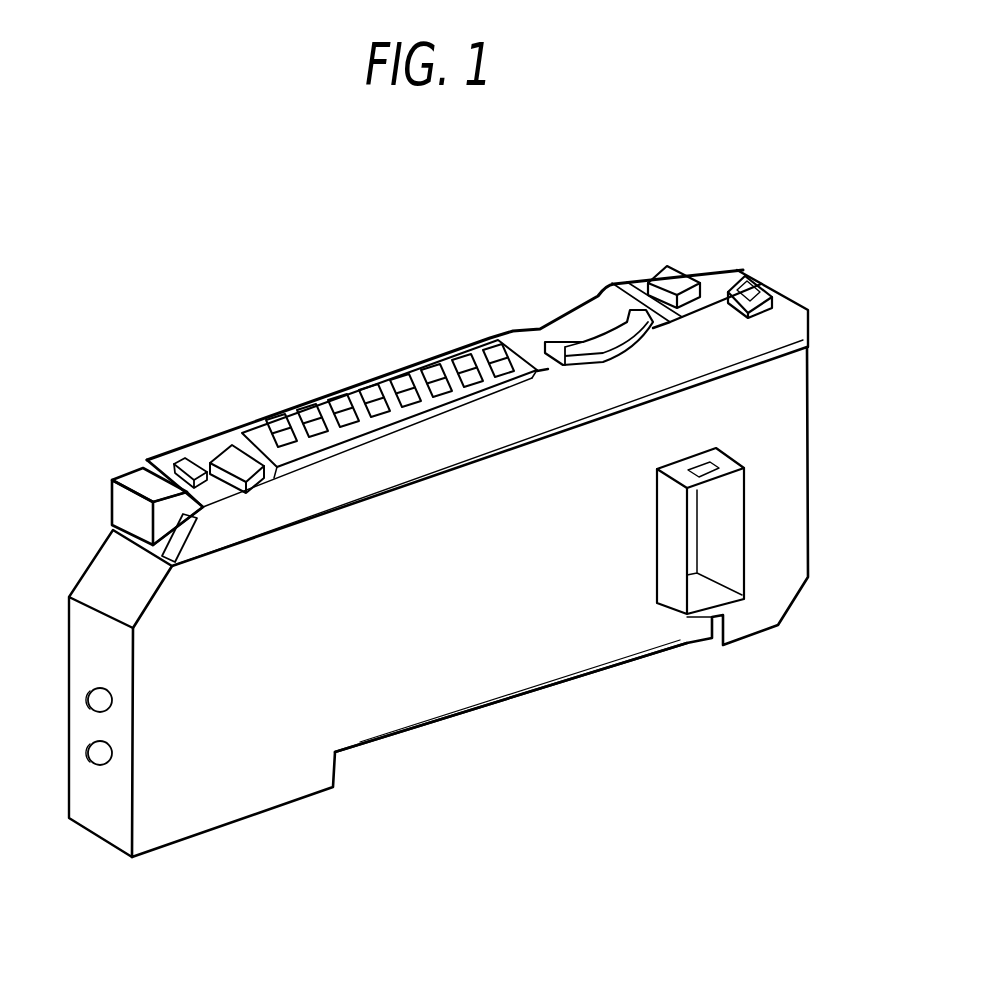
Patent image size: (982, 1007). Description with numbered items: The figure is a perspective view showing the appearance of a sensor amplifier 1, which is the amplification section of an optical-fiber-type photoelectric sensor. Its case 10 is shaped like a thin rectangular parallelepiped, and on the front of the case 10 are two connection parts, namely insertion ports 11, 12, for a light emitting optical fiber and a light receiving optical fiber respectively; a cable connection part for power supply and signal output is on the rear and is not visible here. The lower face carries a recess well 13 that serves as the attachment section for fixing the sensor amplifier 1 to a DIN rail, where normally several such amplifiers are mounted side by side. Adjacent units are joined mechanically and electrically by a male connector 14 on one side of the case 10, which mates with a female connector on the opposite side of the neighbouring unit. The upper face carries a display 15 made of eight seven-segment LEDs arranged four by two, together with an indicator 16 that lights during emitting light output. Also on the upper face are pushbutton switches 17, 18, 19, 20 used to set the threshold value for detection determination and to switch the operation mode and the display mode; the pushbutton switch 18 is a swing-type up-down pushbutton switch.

The sensor amplifier 1 is at (378, 287).
The case 10 is at (794, 402).
The connection part 11 is at (88, 690).
The connection part 12 is at (88, 746).
The recess well 13 is at (467, 711).
The male connector 14 is at (672, 598).
The display 15 is at (375, 393).
The indicator 16 is at (186, 453).
The pushbutton switch 17 is at (223, 443).
The pushbutton switch 18 is at (598, 340).
The pushbutton switch 19 is at (673, 278).
The pushbutton switch 20 is at (753, 284).